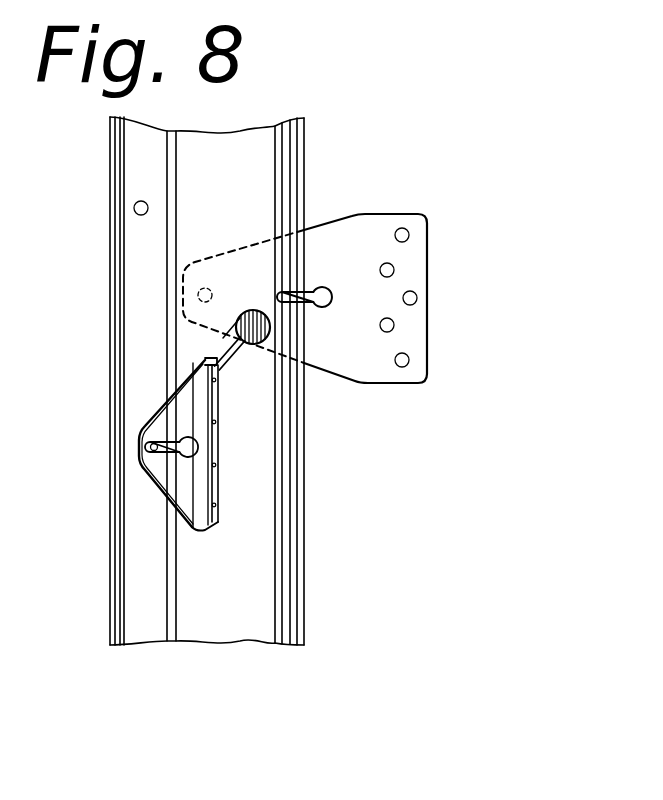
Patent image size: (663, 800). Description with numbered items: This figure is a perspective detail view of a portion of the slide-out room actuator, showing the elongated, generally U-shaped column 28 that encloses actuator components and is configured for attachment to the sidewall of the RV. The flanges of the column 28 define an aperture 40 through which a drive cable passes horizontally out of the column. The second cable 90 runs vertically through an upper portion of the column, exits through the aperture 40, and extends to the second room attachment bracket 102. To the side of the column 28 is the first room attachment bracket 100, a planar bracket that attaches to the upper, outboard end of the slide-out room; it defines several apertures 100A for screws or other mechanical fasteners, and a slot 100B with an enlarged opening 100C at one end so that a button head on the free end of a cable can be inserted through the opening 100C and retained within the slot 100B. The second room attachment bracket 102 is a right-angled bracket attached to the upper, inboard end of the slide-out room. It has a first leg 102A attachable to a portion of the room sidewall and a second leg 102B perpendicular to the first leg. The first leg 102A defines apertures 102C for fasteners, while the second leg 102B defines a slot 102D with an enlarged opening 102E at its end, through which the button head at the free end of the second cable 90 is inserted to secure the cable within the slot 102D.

The column 28 is at (148, 163).
The aperture 40 is at (268, 337).
The second cable 90 is at (248, 343).
The first room attachment bracket 100 is at (362, 228).
The apertures 100A is at (417, 297).
The slot 100B is at (291, 291).
The enlarged opening 100C is at (325, 289).
The second room attachment bracket 102 is at (239, 509).
The first leg 102A is at (220, 518).
The second leg 102B is at (197, 490).
The apertures 102C is at (220, 466).
The slot 102D is at (149, 446).
The enlarged opening 102E is at (200, 446).